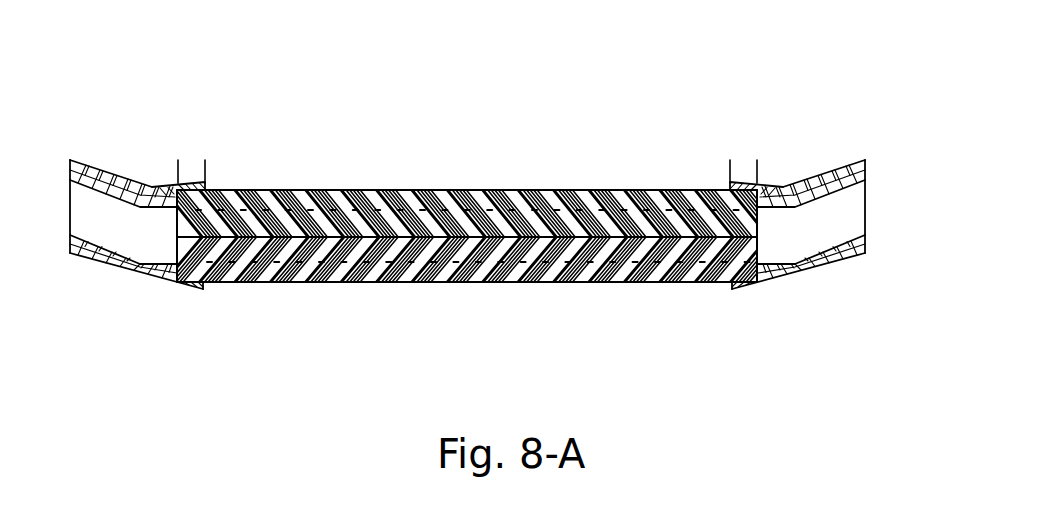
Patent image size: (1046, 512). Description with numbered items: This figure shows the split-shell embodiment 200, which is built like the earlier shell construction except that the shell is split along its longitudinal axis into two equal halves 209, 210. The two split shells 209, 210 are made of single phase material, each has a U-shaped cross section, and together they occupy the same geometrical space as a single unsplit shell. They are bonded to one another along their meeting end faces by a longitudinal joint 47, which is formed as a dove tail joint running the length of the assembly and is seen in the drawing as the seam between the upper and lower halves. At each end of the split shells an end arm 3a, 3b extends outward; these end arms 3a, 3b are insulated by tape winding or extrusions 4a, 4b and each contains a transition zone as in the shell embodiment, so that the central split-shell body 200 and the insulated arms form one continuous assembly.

The split-shell embodiment 200 is at (440, 168).
The split shell half 209 is at (627, 191).
The split shell half 210 is at (600, 283).
The longitudinal joint 47 is at (401, 238).
The tape winding or extrusion 4a is at (115, 182).
The tape winding or extrusion 4b is at (857, 152).
The end arm 3a is at (133, 231).
The end arm 3b is at (847, 222).